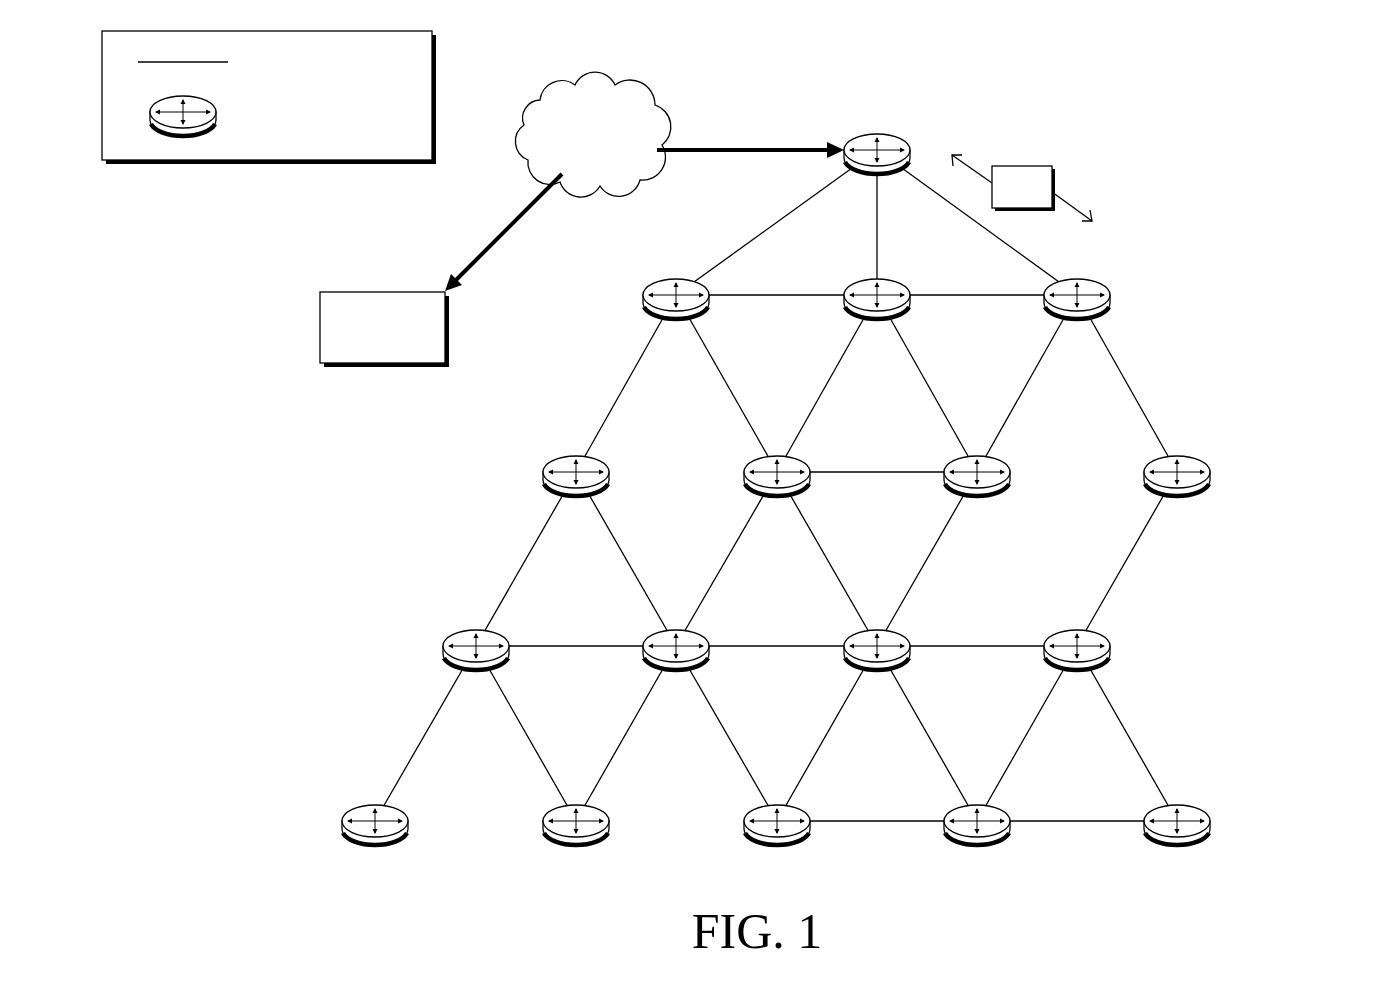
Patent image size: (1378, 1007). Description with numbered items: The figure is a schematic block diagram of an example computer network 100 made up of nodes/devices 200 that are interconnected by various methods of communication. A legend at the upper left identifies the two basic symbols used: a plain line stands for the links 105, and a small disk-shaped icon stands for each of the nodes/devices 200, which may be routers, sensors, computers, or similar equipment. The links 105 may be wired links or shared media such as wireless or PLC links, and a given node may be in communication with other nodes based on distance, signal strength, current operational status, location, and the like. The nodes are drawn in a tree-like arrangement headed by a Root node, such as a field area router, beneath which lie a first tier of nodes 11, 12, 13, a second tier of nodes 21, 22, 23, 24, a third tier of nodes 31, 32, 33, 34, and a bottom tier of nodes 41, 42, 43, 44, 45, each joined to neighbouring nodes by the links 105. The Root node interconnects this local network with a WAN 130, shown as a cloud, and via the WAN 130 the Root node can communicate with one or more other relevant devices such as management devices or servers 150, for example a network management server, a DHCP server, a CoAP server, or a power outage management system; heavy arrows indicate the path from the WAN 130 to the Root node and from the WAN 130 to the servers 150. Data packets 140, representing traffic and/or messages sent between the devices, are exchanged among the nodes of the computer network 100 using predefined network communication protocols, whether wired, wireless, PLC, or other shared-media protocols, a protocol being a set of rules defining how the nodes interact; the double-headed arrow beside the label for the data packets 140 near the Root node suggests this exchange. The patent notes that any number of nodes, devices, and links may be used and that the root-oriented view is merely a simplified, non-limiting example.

The computer network 100 is at (1289, 101).
The links 105 is at (657, 433).
The nodes/devices 200 is at (273, 116).
The WAN 130 is at (574, 157).
The servers 150 is at (401, 355).
The data packets 140 is at (1003, 199).
The node 11 is at (676, 321).
The node 12 is at (877, 321).
The node 13 is at (1077, 321).
The node 21 is at (576, 498).
The node 22 is at (777, 498).
The node 23 is at (977, 498).
The node 24 is at (1177, 498).
The node 31 is at (476, 671).
The node 32 is at (676, 671).
The node 33 is at (877, 671).
The node 34 is at (1077, 671).
The node 41 is at (375, 846).
The node 42 is at (576, 846).
The node 43 is at (777, 846).
The node 44 is at (977, 846).
The node 45 is at (1177, 846).